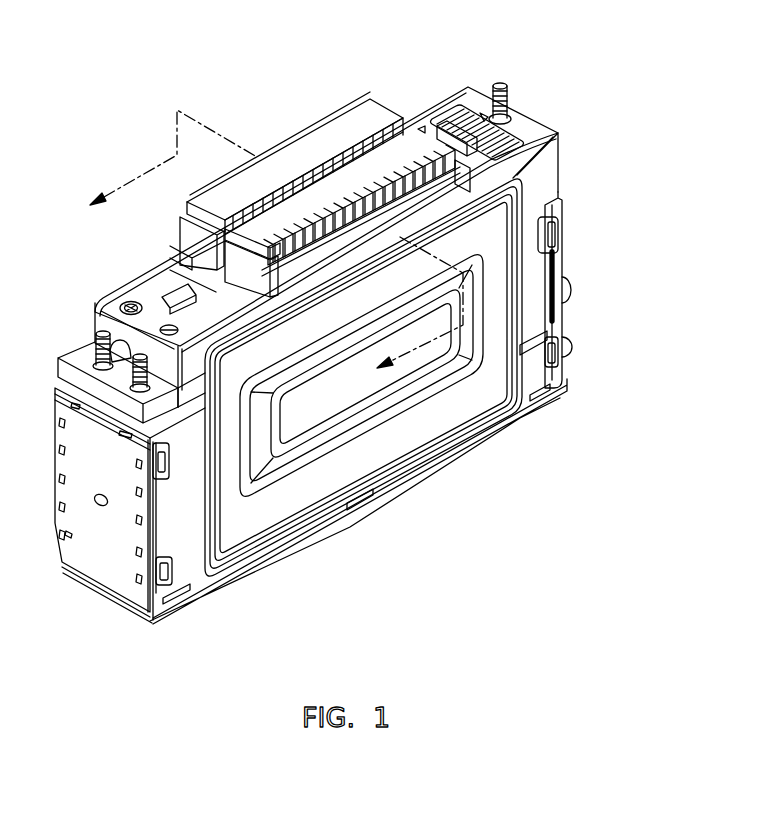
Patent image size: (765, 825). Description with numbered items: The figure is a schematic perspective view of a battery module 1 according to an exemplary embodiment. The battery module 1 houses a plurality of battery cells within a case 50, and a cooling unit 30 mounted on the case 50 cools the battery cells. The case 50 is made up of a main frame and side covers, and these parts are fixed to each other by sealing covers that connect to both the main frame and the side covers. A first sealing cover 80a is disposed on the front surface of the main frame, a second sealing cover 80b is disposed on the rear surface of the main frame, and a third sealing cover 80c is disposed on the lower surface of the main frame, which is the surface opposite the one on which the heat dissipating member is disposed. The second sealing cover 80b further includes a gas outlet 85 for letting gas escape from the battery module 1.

The battery module 1 is at (380, 30).
The cooling unit 30 is at (304, 121).
The case 50 is at (566, 157).
The first sealing cover 80a is at (121, 568).
The second sealing cover 80b is at (565, 247).
The third sealing cover 80c is at (384, 492).
The gas outlet 85 is at (577, 350).